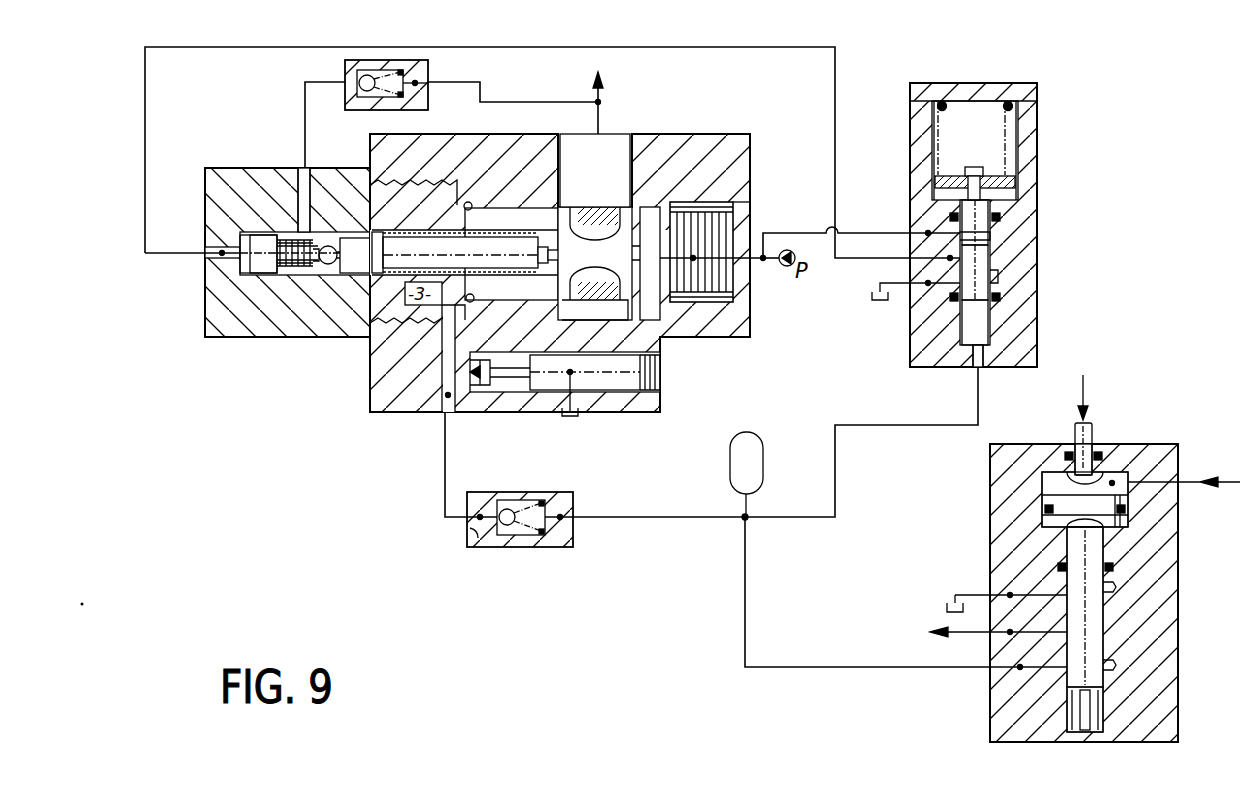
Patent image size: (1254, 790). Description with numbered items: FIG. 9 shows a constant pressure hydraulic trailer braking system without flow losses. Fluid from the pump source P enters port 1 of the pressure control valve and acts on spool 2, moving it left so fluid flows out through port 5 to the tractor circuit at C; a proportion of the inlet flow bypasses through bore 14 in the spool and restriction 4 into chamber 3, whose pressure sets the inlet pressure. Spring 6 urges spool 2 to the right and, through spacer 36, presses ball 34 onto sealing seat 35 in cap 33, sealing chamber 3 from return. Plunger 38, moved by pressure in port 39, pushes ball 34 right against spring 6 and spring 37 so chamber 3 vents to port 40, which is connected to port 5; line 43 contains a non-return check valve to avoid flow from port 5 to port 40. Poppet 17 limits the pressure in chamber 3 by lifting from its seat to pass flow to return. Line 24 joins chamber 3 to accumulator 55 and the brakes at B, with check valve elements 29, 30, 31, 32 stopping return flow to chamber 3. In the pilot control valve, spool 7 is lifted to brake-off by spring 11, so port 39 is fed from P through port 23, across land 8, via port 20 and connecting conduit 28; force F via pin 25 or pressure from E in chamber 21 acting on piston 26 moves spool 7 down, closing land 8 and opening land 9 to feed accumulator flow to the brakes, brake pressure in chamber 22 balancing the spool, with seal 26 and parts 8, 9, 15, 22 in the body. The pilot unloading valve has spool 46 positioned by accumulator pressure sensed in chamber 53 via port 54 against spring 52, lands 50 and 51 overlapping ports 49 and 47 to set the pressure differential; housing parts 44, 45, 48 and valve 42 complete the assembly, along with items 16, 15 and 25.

The port 1 is at (730, 195).
The spool 2 is at (626, 212).
The chamber 3 is at (400, 367).
The restriction 4 is at (545, 240).
The port 5 is at (612, 147).
The spring 6 is at (430, 270).
The spool 7 is at (1082, 548).
The land 8 is at (1100, 602).
The land 9 is at (1103, 648).
The spring 11 is at (1100, 706).
The bore 14 is at (690, 232).
The pressure port 15 is at (1040, 676).
The spring housing 16 is at (722, 326).
The poppet 17 is at (507, 382).
The port 20 is at (1040, 642).
The chamber 21 is at (1052, 482).
The chamber 22 is at (1078, 712).
The port 23 is at (1040, 590).
The line 24 is at (445, 453).
The actuating pin 25 is at (1088, 440).
The piston 26 is at (1125, 522).
The connecting conduit 28 is at (743, 49).
The check valve housing 29 is at (558, 540).
The check valve ball 30 is at (505, 508).
The check valve spring 31 is at (520, 500).
The check valve seat 32 is at (470, 538).
The cap 33 is at (358, 328).
The ball 34 is at (328, 268).
The sealing seat 35 is at (322, 232).
The spacer 36 is at (356, 236).
The spring 37 is at (292, 290).
The plunger 38 is at (250, 278).
The port 39 is at (220, 262).
The port 40 is at (300, 165).
The pilot check valve 42 is at (422, 82).
The line 43 is at (300, 98).
The pressure limiting valve housing 44 is at (932, 356).
The cover 45 is at (1022, 102).
The spool 46 is at (988, 222).
The port 47 is at (914, 315).
The control port 48 is at (928, 258).
The port 49 is at (940, 233).
The land 50 is at (992, 232).
The land 51 is at (986, 275).
The spring 52 is at (1000, 172).
The chamber 53 is at (988, 330).
The port 54 is at (972, 362).
The accumulator 55 is at (752, 446).